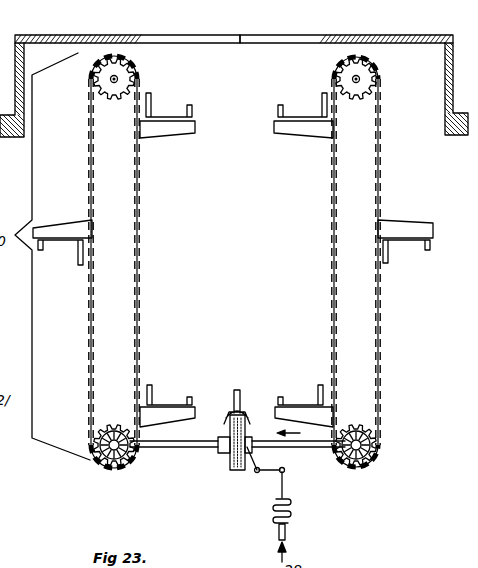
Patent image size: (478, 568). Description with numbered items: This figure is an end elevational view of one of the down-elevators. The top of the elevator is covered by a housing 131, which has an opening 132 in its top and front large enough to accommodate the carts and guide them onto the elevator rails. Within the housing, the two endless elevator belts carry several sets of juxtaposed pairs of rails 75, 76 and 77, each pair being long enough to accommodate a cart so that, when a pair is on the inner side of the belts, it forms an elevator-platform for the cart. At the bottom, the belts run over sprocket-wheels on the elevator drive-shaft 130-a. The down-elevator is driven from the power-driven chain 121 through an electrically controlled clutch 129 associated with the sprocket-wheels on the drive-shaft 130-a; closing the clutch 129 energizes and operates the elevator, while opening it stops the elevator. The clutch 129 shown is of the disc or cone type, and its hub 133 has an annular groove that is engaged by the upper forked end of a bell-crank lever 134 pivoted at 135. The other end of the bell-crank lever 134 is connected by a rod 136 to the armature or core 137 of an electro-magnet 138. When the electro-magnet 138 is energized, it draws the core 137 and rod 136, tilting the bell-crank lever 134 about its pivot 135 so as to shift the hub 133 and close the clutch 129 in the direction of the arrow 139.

The housing 131 is at (75, 35).
The opening 132 is at (283, 35).
The rails 77 is at (164, 114).
The rails 76 is at (60, 247).
The rails 75 is at (163, 404).
The power-driven chain 121 is at (241, 413).
The clutch 129 is at (228, 455).
The elevator drive-shaft 130-a is at (172, 450).
The hub 133 is at (247, 440).
The bell-crank lever 134 is at (250, 468).
The pivot 135 is at (255, 474).
The rod 136 is at (285, 487).
The armature or core 137 is at (285, 533).
The electro-magnet 138 is at (272, 492).
The arrow 139 is at (303, 433).